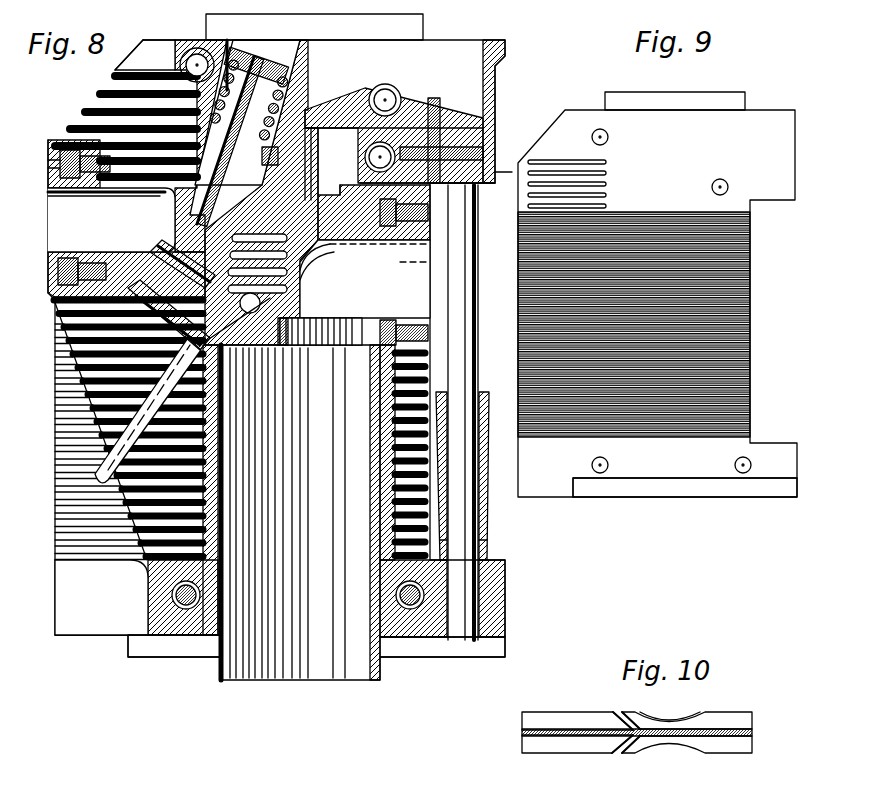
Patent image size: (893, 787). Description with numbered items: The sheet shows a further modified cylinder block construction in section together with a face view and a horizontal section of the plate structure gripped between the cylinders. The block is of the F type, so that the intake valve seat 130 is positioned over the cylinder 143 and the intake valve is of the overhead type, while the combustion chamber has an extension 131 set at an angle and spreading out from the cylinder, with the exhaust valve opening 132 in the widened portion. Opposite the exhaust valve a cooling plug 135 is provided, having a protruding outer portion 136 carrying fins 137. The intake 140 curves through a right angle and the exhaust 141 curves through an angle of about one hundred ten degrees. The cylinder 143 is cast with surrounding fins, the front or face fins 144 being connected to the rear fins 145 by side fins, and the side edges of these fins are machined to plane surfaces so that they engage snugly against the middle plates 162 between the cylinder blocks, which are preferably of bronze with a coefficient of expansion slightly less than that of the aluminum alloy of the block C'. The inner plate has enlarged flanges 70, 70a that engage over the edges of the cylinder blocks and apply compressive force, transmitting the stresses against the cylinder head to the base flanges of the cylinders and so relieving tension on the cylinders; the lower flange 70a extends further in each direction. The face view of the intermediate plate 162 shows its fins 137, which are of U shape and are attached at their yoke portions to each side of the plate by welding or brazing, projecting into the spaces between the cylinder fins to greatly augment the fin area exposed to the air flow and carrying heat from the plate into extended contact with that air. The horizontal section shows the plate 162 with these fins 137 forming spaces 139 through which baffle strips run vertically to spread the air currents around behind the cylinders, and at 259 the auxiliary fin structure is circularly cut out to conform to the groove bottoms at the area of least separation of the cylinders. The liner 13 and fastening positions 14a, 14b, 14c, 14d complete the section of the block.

In FIG. 8, the inner plate flange 70 is at (423, 30).
In FIG. 9, the inner plate flange 70 is at (708, 97).
In FIG. 8, the inner plate flange 70a is at (496, 648).
In FIG. 9, the inner plate flange 70a is at (657, 500).
In FIG. 8, the bolt 14a is at (425, 350).
In FIG. 8, the bolt 14b is at (425, 253).
In FIG. 8, the bolt 14c is at (40, 172).
In FIG. 8, the bolt 14d is at (482, 100).
In FIG. 8, the exhaust 141 is at (111, 220).
In FIG. 8, the exhaust valve opening 132 is at (192, 290).
In FIG. 8, the cooling plug 135 is at (185, 340).
In FIG. 8, the combustion chamber extension 131 is at (238, 318).
In FIG. 8, the fins 137 is at (62, 380).
In FIG. 9, the fins 137 is at (607, 190).
In FIG. 10, the fins 137 is at (543, 698).
In FIG. 8, the protruding outer portion 136 is at (66, 440).
In FIG. 8, the rear fins 145 is at (136, 572).
In FIG. 8, the cylinder C' is at (174, 662).
In FIG. 8, the cylinder liner 13 is at (400, 640).
In FIG. 8, the cylinder 143 is at (383, 515).
In FIG. 8, the front or face fins 144 is at (405, 455).
In FIG. 8, the intake valve seat 130 is at (340, 336).
In FIG. 8, the intake 140 is at (365, 279).
In FIG. 9, the middle plate 162 is at (657, 303).
In FIG. 10, the middle plate 162 is at (580, 727).
In FIG. 10, the spaces 139 is at (615, 715).
In FIG. 10, the cut-out of auxiliary fin structure 259 is at (669, 722).